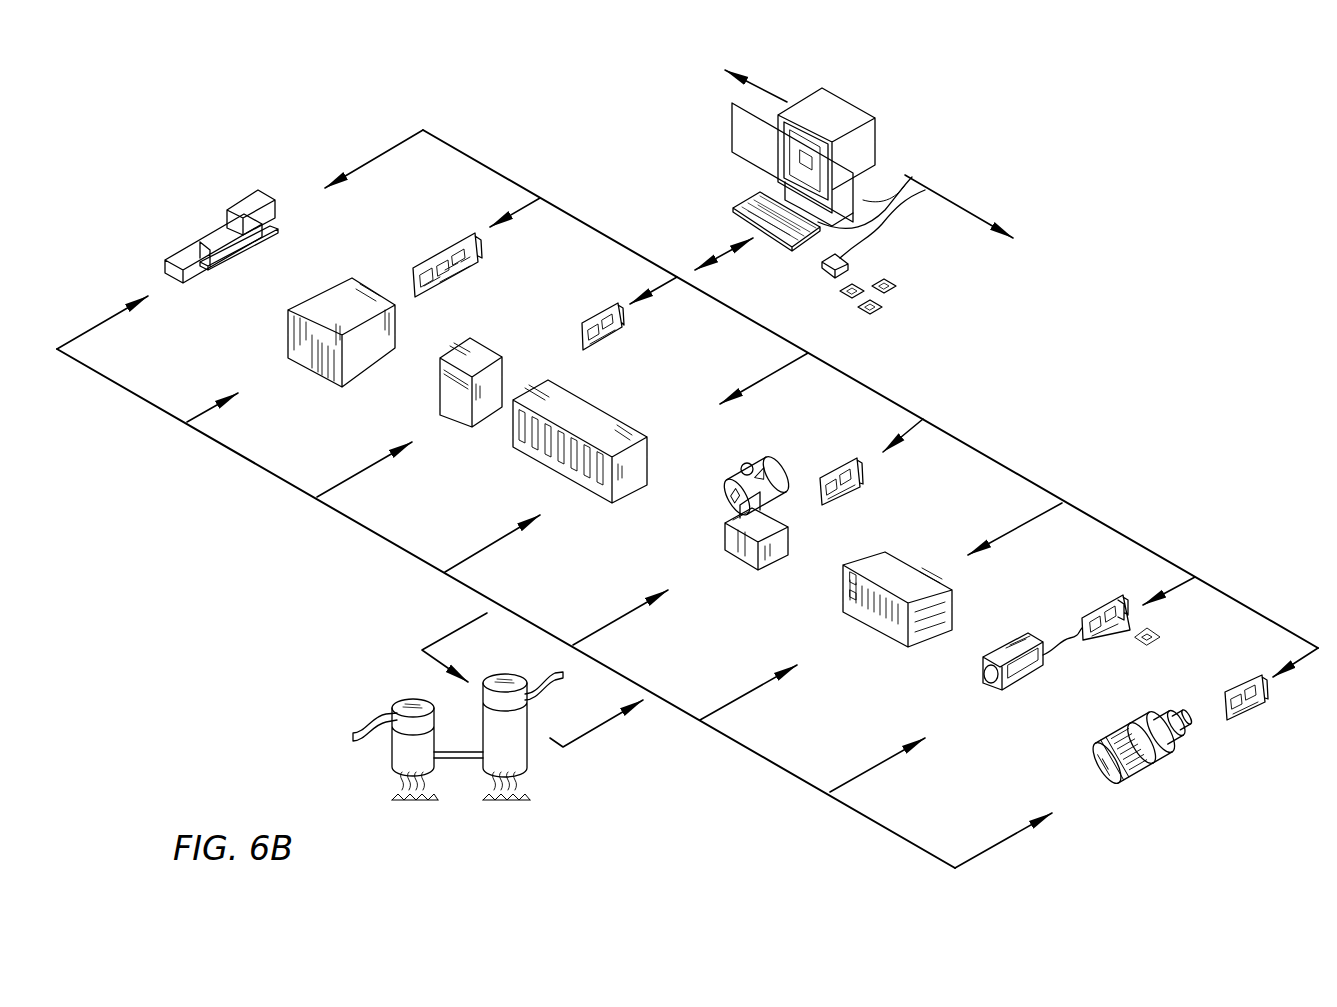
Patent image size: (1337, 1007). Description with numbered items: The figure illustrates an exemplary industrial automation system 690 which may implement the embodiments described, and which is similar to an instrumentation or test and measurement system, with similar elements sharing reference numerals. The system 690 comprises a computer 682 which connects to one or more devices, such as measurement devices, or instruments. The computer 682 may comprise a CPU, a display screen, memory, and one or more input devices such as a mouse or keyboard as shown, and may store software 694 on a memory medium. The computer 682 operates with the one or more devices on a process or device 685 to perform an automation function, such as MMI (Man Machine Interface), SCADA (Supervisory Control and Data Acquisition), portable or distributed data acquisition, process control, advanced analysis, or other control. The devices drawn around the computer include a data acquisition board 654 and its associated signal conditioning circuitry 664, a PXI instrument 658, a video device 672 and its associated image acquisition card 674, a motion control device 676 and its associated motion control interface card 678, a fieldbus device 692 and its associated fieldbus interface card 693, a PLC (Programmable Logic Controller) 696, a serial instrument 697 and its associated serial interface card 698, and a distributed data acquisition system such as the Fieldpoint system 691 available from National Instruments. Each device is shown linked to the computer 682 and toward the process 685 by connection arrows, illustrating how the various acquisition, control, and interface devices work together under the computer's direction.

The industrial automation system 690 is at (1170, 218).
The Fieldpoint system 691 is at (237, 200).
The signal conditioning circuitry 664 is at (317, 303).
The data acquisition board 654 is at (449, 279).
The serial interface card 698 is at (600, 315).
The serial instrument 697 is at (443, 400).
The PLC (Programmable Logic Controller) 696 is at (595, 415).
The computer 682 is at (842, 107).
The software 694 is at (873, 310).
The fieldbus interface card 693 is at (840, 467).
The fieldbus device 692 is at (732, 545).
The PXI instrument 658 is at (900, 560).
The image acquisition card 674 is at (1098, 605).
The video device 672 is at (1010, 650).
The motion control device 676 is at (1137, 770).
The motion control interface card 678 is at (1252, 705).
The process or device 685 is at (363, 725).